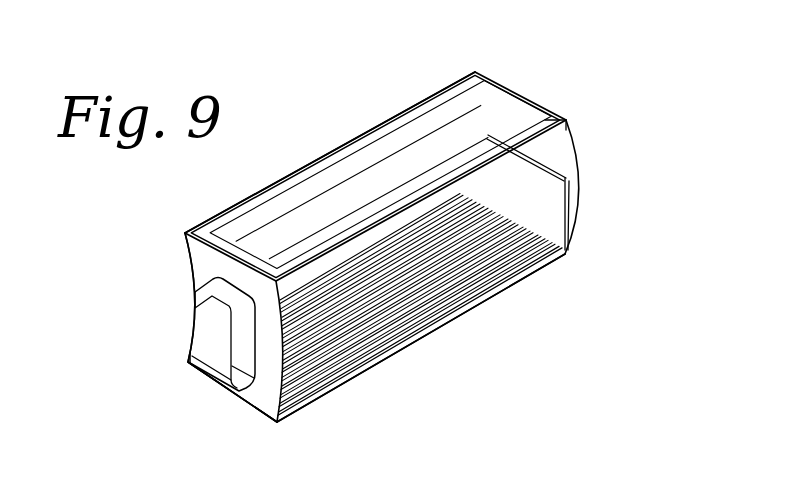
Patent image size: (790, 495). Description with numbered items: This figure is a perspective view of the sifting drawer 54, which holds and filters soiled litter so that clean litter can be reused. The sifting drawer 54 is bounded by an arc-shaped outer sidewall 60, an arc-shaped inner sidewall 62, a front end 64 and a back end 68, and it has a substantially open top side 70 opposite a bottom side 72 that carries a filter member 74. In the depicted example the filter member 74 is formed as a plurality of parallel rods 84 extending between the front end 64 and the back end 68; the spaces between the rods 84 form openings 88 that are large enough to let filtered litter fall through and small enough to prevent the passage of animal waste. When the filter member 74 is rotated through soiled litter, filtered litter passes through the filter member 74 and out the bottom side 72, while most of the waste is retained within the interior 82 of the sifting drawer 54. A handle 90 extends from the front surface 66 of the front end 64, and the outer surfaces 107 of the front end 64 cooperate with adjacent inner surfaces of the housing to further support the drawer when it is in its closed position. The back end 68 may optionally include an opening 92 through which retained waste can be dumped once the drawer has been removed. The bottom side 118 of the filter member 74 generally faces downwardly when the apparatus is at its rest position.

The sifting drawer 54 is at (541, 68).
The outer sidewall 60 is at (572, 148).
The inner sidewall 62 is at (347, 177).
The front end 64 is at (266, 407).
The front surface 66 is at (200, 278).
The back end 68 is at (572, 197).
The open top side 70 is at (275, 198).
The bottom side 72 is at (340, 385).
The filter member 74 is at (323, 292).
The interior 82 is at (183, 227).
The rods 84 is at (432, 325).
The openings 88 is at (566, 128).
The handle 90 is at (207, 347).
The opening 92 is at (556, 132).
The outer surfaces 107 is at (198, 258).
The bottom side 118 is at (393, 357).